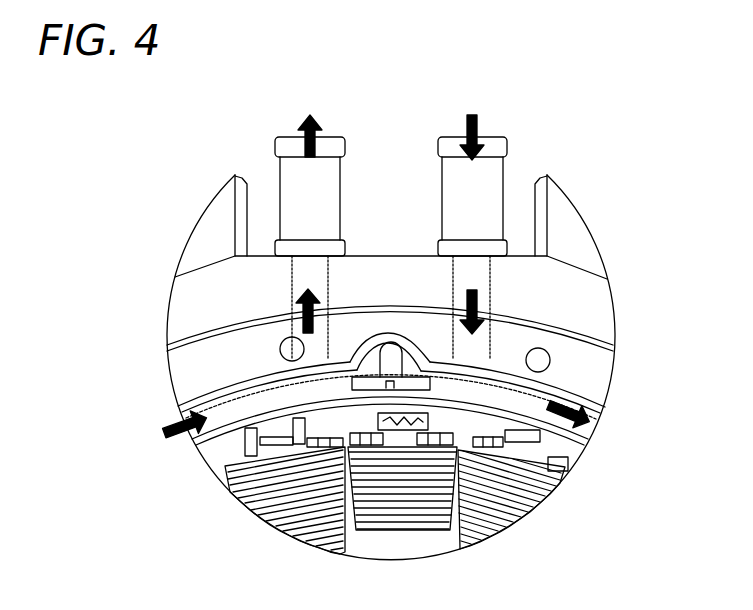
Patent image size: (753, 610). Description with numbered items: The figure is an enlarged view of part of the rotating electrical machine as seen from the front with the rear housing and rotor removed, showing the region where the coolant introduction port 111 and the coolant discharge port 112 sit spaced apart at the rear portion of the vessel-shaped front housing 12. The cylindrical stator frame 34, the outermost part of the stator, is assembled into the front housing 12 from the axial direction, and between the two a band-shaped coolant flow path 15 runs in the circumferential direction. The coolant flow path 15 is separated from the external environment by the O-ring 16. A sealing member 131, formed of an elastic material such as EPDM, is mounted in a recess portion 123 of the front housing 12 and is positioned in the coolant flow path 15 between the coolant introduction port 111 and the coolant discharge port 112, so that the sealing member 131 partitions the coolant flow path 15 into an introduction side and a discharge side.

The front housing 12 is at (603, 388).
The coolant flow path 15 is at (590, 422).
The O-ring 16 is at (593, 405).
The stator frame 34 is at (592, 433).
The coolant introduction port 111 is at (495, 137).
The coolant discharge port 112 is at (276, 137).
The recess portion 123 is at (392, 347).
The sealing member 131 is at (382, 365).